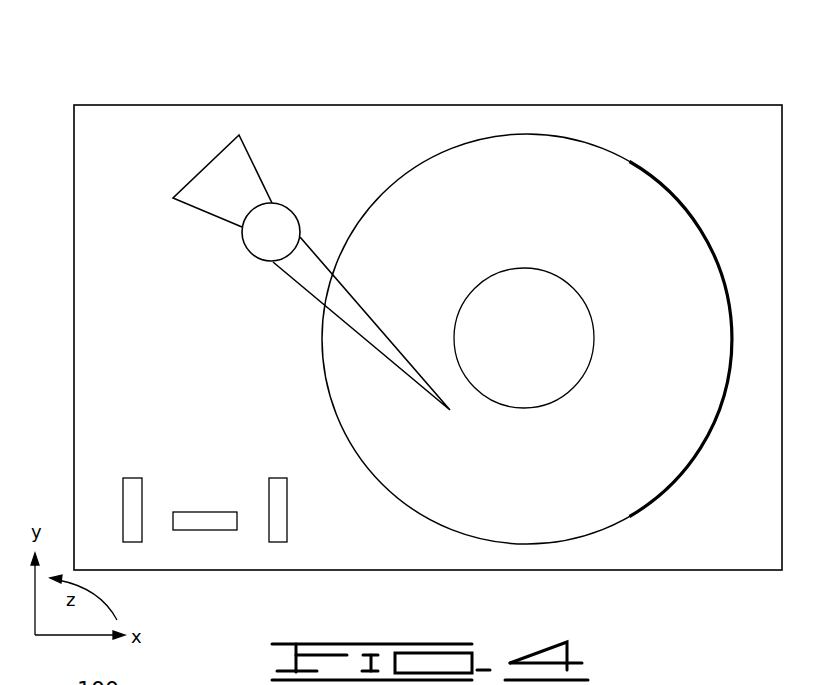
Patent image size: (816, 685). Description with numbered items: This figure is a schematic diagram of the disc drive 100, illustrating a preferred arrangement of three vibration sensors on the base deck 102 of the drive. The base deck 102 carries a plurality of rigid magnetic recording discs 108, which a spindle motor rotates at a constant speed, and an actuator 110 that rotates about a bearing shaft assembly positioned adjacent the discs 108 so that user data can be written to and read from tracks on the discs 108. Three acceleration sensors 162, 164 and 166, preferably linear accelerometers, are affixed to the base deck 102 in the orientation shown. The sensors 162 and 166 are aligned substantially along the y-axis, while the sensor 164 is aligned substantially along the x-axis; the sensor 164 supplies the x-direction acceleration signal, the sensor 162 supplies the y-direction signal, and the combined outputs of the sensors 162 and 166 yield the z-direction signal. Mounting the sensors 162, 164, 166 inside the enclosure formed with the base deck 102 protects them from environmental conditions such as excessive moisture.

The disc drive 100 is at (198, 58).
The base deck 102 is at (133, 118).
The magnetic recording discs 108 is at (578, 162).
The actuator 110 is at (277, 200).
The acceleration sensor 162 is at (133, 543).
The acceleration sensor 164 is at (207, 532).
The acceleration sensor 166 is at (277, 543).